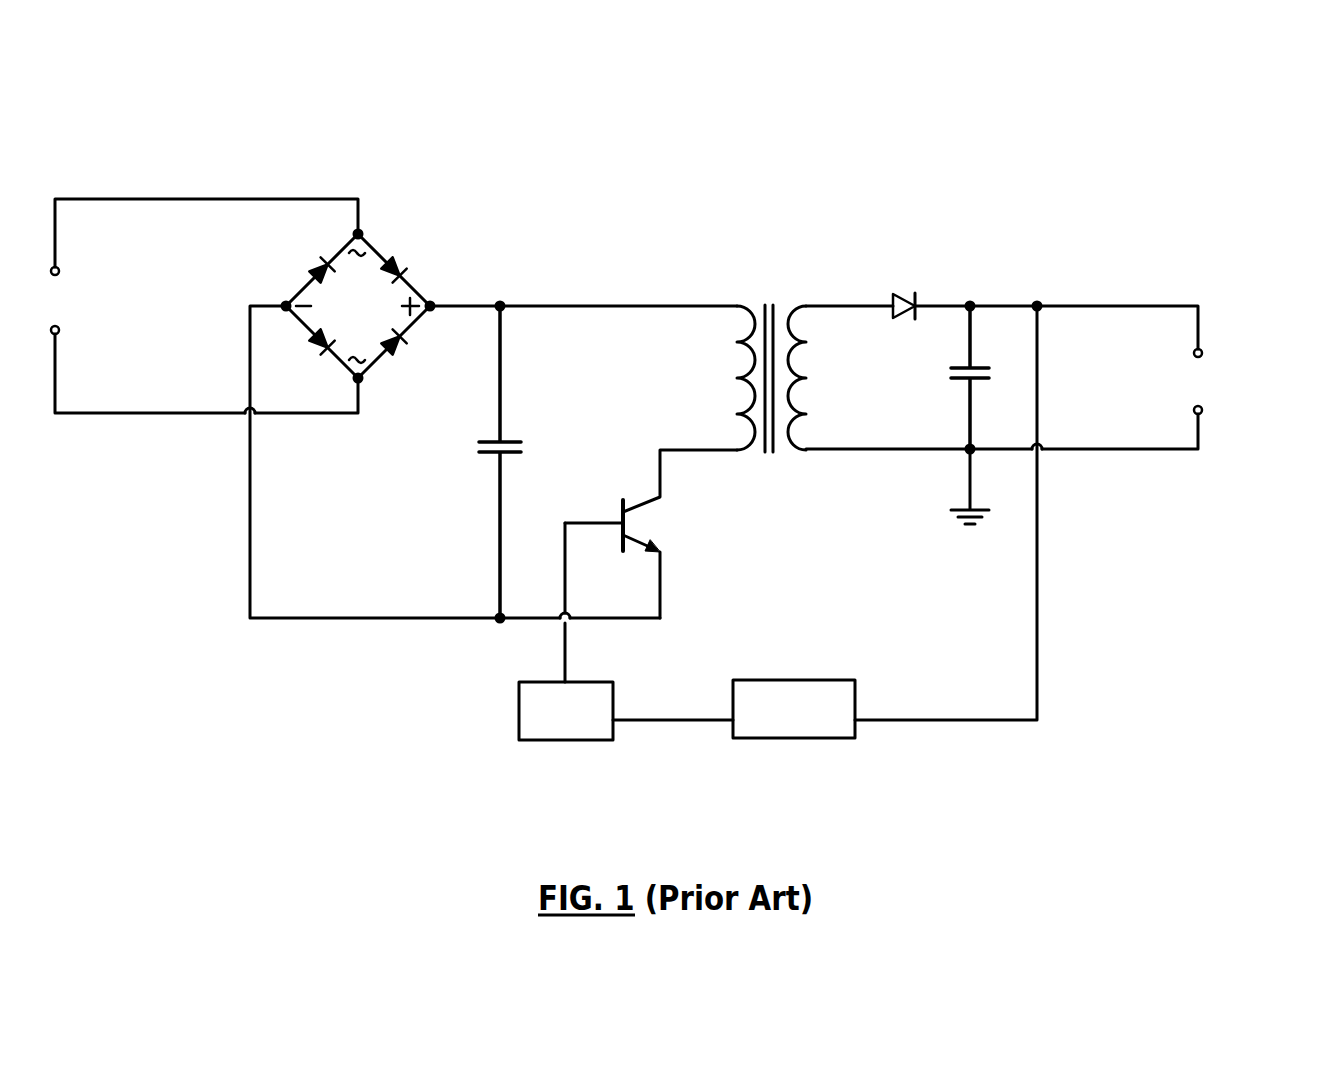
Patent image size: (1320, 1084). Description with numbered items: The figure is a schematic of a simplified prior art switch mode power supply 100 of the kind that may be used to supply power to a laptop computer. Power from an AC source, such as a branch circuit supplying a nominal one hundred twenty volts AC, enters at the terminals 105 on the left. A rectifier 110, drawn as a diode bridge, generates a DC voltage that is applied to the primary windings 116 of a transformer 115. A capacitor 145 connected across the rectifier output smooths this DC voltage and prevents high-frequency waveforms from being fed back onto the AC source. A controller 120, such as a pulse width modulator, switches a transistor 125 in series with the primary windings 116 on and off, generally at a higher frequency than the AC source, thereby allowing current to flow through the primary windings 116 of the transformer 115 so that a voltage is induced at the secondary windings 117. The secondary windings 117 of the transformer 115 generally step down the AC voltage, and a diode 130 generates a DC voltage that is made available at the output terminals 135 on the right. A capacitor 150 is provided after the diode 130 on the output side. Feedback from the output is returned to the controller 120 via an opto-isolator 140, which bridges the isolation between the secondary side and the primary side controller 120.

The switch mode power supply 100 is at (1040, 155).
The terminals 105 is at (197, 306).
The rectifier 110 is at (378, 317).
The transformer 115 is at (774, 353).
The primary windings 116 is at (735, 342).
The secondary windings 117 is at (808, 377).
The controller 120 is at (547, 731).
The transistor 125 is at (646, 591).
The diode 130 is at (907, 319).
The terminals 135 is at (1237, 377).
The opto-isolator 140 is at (775, 731).
The capacitor 145 is at (522, 462).
The capacitor 150 is at (992, 415).